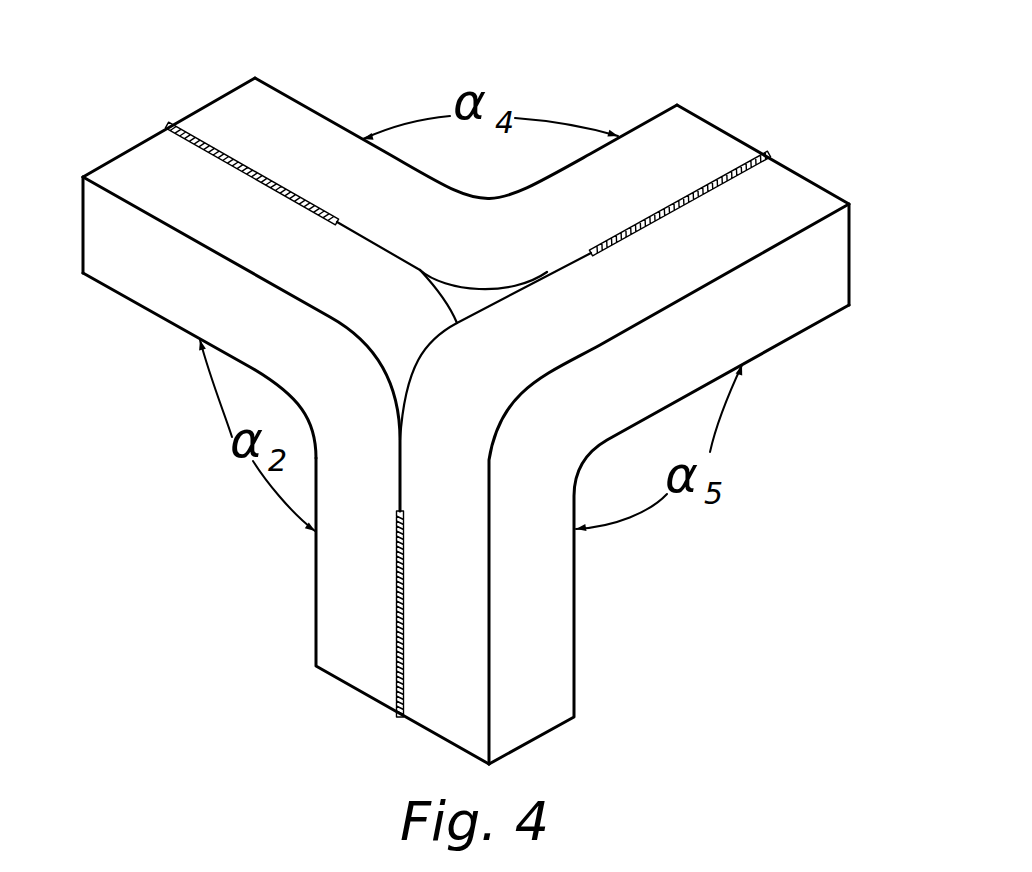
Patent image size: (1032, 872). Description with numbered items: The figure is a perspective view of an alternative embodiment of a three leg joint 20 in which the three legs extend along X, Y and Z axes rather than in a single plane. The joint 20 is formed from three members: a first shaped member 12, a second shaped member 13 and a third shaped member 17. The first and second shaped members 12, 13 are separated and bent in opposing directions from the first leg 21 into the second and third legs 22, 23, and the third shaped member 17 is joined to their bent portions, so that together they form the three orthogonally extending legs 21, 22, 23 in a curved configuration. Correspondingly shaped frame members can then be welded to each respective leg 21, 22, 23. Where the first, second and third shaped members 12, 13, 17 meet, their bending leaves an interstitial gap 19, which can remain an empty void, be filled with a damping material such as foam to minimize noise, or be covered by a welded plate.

The first shaped member 12 is at (356, 616).
The second shaped member 13 is at (654, 430).
The third shaped member 17 is at (233, 267).
The interstitial gap 19 is at (467, 300).
The three leg joint 20 is at (477, 391).
The first leg 21 is at (403, 715).
The second leg 22 is at (170, 128).
The third leg 23 is at (772, 204).